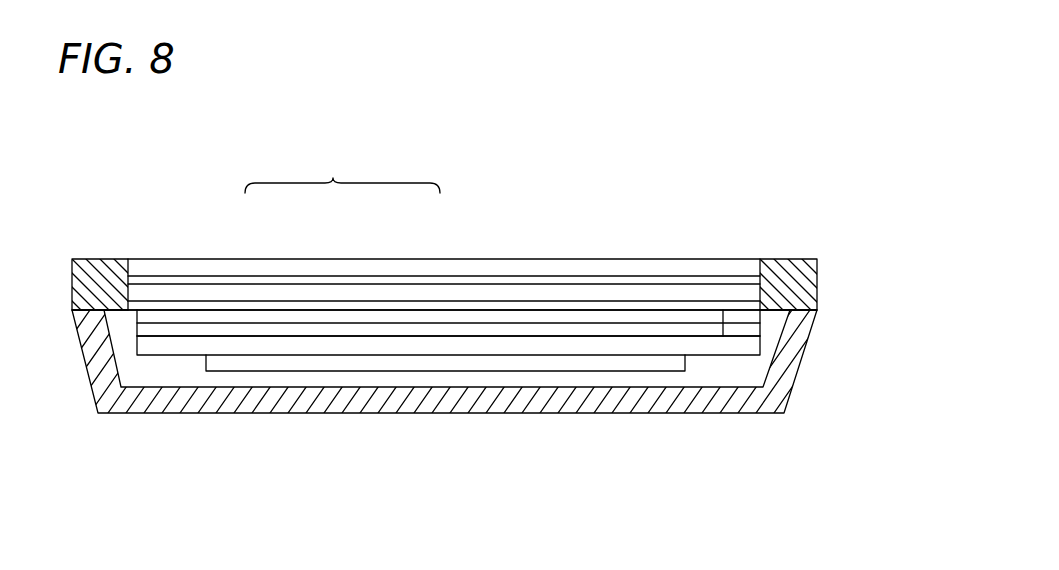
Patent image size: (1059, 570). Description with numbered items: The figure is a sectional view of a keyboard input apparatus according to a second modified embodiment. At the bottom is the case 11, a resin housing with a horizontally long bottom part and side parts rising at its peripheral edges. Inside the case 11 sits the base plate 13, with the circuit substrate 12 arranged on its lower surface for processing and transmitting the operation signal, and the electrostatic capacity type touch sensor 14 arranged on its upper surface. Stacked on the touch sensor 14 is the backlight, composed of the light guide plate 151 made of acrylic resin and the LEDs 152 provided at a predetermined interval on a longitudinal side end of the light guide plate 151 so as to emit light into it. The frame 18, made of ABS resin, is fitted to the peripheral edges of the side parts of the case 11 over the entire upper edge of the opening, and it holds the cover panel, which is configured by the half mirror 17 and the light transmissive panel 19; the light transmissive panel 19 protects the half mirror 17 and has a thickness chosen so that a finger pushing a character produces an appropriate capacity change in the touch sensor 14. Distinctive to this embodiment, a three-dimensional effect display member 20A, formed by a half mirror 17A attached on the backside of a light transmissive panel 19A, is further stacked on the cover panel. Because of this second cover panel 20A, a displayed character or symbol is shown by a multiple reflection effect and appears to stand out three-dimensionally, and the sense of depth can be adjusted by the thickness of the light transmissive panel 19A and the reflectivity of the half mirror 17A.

The case 11 is at (118, 400).
The circuit substrate 12 is at (265, 363).
The base plate 13 is at (463, 343).
The electrostatic capacity type touch sensor 14 is at (550, 328).
The light guide plate 151 is at (632, 320).
The LEDs 152 is at (732, 318).
The half mirror 17 is at (593, 308).
The half mirror 17A is at (375, 268).
The frame 18 is at (92, 264).
The light transmissive panel 19 is at (503, 300).
The light transmissive panel 19A is at (233, 268).
The three-dimensional effect display member 20A is at (342, 170).